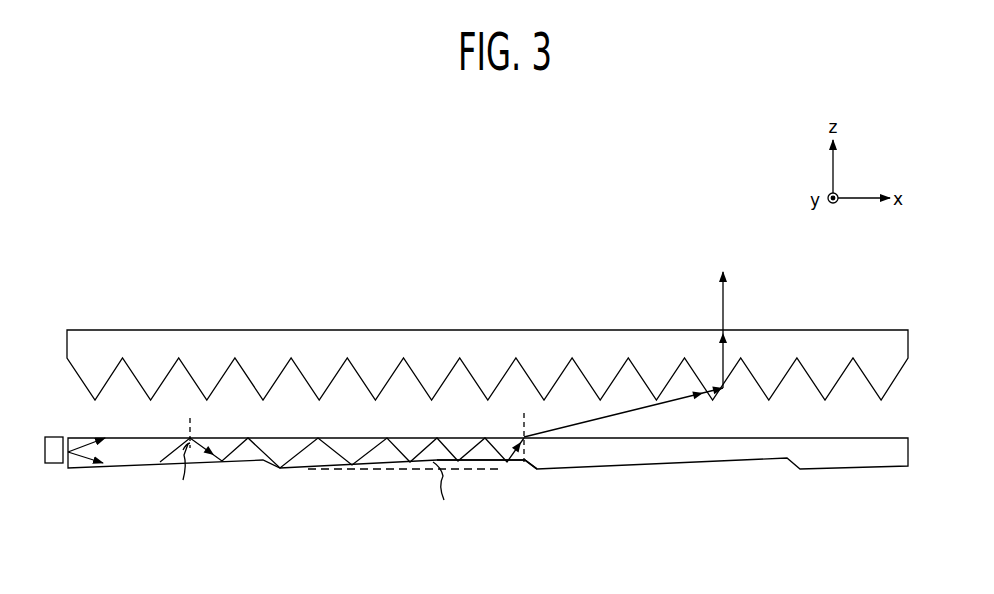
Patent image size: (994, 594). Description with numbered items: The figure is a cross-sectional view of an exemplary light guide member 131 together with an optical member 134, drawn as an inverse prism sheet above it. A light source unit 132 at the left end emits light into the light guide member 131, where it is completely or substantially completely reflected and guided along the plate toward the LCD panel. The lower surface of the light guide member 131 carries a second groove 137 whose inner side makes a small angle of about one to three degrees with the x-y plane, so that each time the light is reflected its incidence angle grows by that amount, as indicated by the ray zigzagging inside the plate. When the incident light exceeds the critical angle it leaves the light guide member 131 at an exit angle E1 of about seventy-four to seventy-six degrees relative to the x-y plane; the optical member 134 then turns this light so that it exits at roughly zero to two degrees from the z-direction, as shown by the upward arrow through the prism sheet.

The light guide member 131 is at (880, 450).
The light source unit 132 is at (56, 455).
The optical member 134 is at (92, 342).
The second groove 137 is at (511, 461).
The exit angle E1 is at (578, 423).